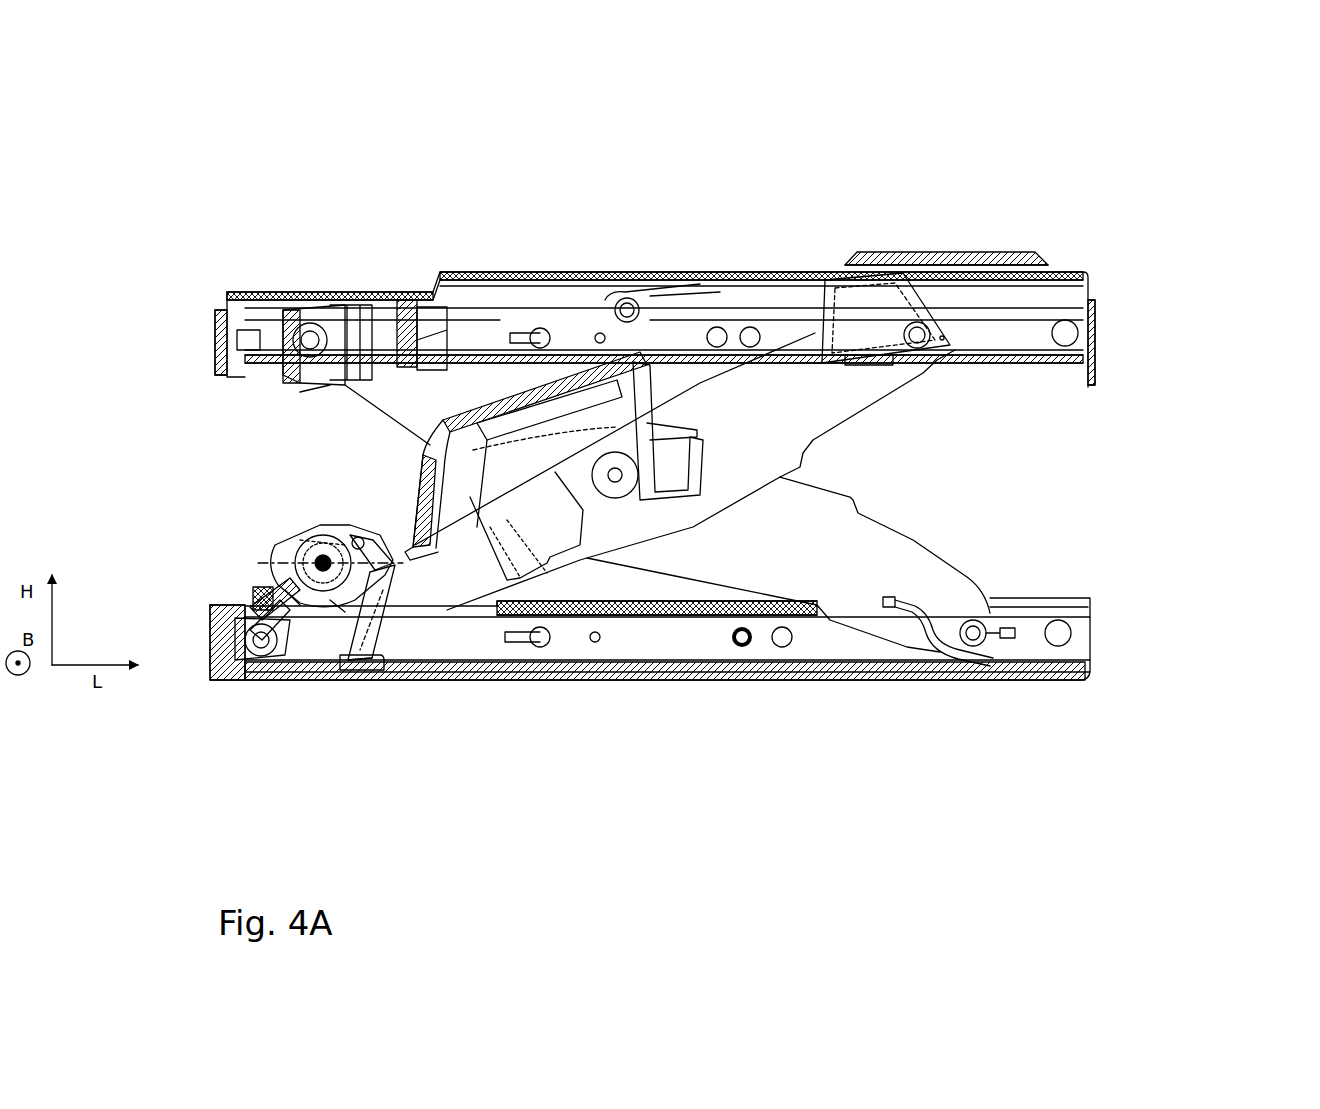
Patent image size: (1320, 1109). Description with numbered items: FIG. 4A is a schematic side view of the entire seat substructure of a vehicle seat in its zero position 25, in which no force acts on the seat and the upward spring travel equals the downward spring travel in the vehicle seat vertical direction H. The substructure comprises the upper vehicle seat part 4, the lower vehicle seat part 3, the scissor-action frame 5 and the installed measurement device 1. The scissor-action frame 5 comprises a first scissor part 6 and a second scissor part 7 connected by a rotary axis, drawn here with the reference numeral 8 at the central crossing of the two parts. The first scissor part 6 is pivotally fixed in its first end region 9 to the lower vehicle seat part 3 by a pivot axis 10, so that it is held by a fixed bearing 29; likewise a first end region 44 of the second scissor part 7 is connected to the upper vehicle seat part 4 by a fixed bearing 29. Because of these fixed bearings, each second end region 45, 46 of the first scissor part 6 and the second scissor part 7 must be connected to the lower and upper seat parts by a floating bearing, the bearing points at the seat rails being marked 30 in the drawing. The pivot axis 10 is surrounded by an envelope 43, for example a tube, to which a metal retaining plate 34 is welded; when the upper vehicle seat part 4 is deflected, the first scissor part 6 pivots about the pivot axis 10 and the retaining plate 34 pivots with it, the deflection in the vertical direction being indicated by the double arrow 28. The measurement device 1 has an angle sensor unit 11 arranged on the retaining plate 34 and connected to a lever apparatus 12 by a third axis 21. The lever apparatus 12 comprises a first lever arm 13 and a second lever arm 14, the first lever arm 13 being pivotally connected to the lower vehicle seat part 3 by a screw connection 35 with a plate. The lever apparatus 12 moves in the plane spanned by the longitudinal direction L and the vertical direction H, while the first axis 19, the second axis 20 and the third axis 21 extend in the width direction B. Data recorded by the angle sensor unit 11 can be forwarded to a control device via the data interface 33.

The measurement device 1 is at (235, 563).
The lower vehicle seat part 3 is at (1150, 633).
The upper vehicle seat part 4 is at (1108, 238).
The scissor-action frame 5 is at (996, 491).
The first scissor part 6 is at (790, 363).
The second scissor part 7 is at (355, 395).
The pivot axis 8 is at (613, 473).
The first end region 9 is at (233, 540).
The pivot axis 10 is at (268, 658).
The angle sensor unit 11 is at (322, 545).
The lever apparatus 12 is at (350, 480).
The first lever arm 13 is at (385, 620).
The second lever arm 14 is at (360, 537).
The first axis 19 is at (350, 660).
The second axis 20 is at (393, 522).
The third axis 21 is at (305, 540).
The zero position 25 is at (1080, 150).
The height adjustment direction 28 is at (1232, 565).
The fixed bearing 29 is at (302, 325).
The bearing bolt 30 is at (920, 322).
The data interface 33 is at (265, 596).
The metal retaining plate 34 is at (243, 628).
The connection 35 is at (365, 665).
The envelope 43 is at (235, 632).
The first end region 44 is at (311, 255).
The second end region 45 is at (912, 705).
The second end region 46 is at (873, 222).